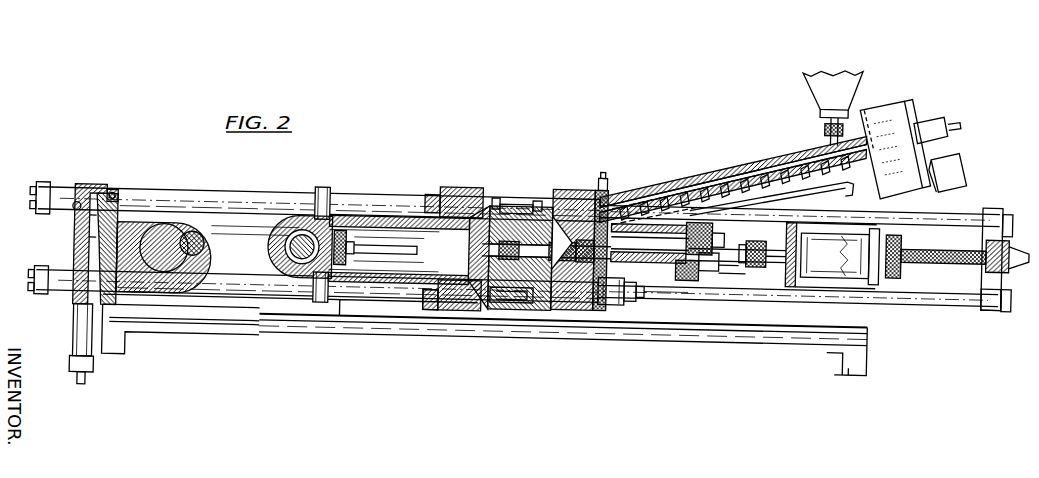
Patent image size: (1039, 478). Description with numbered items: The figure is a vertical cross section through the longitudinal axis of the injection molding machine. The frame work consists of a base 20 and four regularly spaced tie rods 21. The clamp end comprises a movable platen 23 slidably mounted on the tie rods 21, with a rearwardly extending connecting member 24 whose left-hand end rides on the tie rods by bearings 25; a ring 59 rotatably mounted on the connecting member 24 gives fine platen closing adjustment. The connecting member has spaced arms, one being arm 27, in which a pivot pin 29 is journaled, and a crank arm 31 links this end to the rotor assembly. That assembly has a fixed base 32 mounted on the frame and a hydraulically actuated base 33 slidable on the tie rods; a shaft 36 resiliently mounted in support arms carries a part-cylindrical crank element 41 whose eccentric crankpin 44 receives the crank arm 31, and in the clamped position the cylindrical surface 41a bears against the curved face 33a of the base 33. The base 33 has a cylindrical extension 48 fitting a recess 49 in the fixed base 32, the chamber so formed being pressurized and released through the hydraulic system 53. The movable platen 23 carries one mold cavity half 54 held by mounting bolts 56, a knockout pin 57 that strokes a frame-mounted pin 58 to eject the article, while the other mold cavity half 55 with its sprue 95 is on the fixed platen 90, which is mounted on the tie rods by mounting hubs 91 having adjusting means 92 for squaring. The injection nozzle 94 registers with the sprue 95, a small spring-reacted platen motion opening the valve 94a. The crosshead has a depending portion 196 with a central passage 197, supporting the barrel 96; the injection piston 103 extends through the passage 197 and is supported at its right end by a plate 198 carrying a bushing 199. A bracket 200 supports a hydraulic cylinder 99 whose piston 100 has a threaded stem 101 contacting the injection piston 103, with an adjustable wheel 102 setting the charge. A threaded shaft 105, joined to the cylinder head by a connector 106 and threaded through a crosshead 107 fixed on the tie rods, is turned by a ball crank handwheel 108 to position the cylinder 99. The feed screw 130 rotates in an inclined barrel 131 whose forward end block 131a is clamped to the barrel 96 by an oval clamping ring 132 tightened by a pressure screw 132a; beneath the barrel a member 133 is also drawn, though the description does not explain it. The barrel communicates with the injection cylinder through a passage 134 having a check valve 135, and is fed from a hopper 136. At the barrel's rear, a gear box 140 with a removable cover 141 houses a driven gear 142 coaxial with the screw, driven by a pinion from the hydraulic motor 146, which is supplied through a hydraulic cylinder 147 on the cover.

The base 20 is at (384, 330).
The tie rods 21 is at (254, 203).
The movable platen 23 is at (452, 186).
The connecting member 24 is at (356, 214).
The bearings 25 is at (323, 182).
The arm 27 is at (300, 237).
The pivot pin 29 is at (292, 252).
The crank arm 31 is at (222, 228).
The fixed base 32 is at (84, 183).
The hydraulically actuated base 33 is at (112, 212).
The curved face 33a is at (120, 243).
The shaft 36 is at (166, 238).
The crank element 41 is at (143, 228).
The cylindrical surface 41a is at (111, 188).
The crankpin 44 is at (194, 229).
The cylindrical extension 48 is at (96, 222).
The recess 49 is at (96, 236).
The hydraulic system 53 is at (76, 328).
The mold cavity half 54 is at (512, 196).
The mold cavity half 55 is at (530, 205).
The mounting bolts 56 is at (495, 188).
The knockout pin 57 is at (470, 256).
The pin 58 is at (418, 243).
The ring 59 is at (434, 290).
The fixed platen 90 is at (572, 180).
The mounting hubs 91 is at (618, 308).
The adjusting means 92 is at (598, 306).
The injection nozzle 94 is at (522, 268).
The sprue passage valve 94a is at (585, 262).
The sprue 95 is at (514, 246).
The barrel 96 is at (688, 228).
The hydraulic cylinder 99 is at (834, 295).
The piston 100 is at (812, 258).
The stem 101 is at (758, 252).
The adjustable wheel 102 is at (790, 275).
The injection piston 103 is at (736, 260).
The threaded shaft 105 is at (960, 246).
The connector 106 is at (900, 262).
The crosshead 107 is at (985, 300).
The ball crank handwheel 108 is at (1030, 298).
The feed screw 130 is at (732, 184).
The barrel 131 is at (772, 176).
The forward end block 131a is at (625, 205).
The clamping ring 132 is at (608, 200).
The pressure screw 132a is at (603, 178).
The heater tray 133 is at (828, 190).
The passage 134 is at (589, 250).
The check valve 135 is at (614, 233).
The hopper 136 is at (815, 88).
The gear box 140 is at (896, 106).
The removable cover 141 is at (918, 110).
The driven gear 142 is at (870, 118).
The hydraulic motor 146 is at (962, 160).
The hydraulic cylinder 147 is at (946, 118).
The depending portion 196 is at (688, 284).
The central passage 197 is at (678, 263).
The plate 198 is at (714, 262).
The bushing 199 is at (700, 275).
The bracket 200 is at (752, 262).